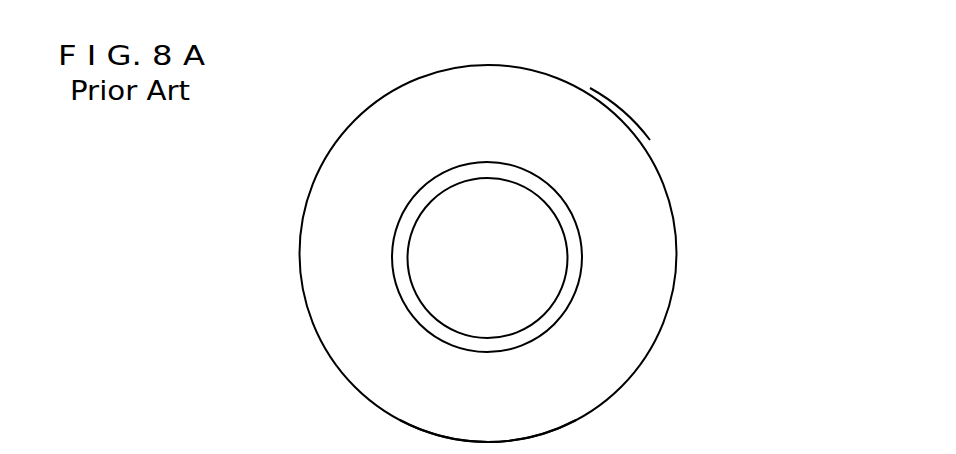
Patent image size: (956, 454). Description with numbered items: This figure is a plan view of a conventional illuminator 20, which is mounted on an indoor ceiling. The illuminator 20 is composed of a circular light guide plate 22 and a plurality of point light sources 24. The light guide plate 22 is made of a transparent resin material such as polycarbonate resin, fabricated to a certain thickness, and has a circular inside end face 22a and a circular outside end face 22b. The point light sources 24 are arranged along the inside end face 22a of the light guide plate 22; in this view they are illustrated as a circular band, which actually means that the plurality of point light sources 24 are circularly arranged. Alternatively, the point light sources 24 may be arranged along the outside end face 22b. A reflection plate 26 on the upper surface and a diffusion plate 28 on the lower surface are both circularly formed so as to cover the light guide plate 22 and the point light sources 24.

The illuminator 20 is at (742, 145).
The light guide plate 22 is at (676, 251).
The inside end face 22a is at (482, 185).
The outside end face 22b is at (627, 100).
The point light sources 24 is at (565, 249).
The reflection plate 26 is at (492, 408).
The diffusion plate 28 is at (543, 408).